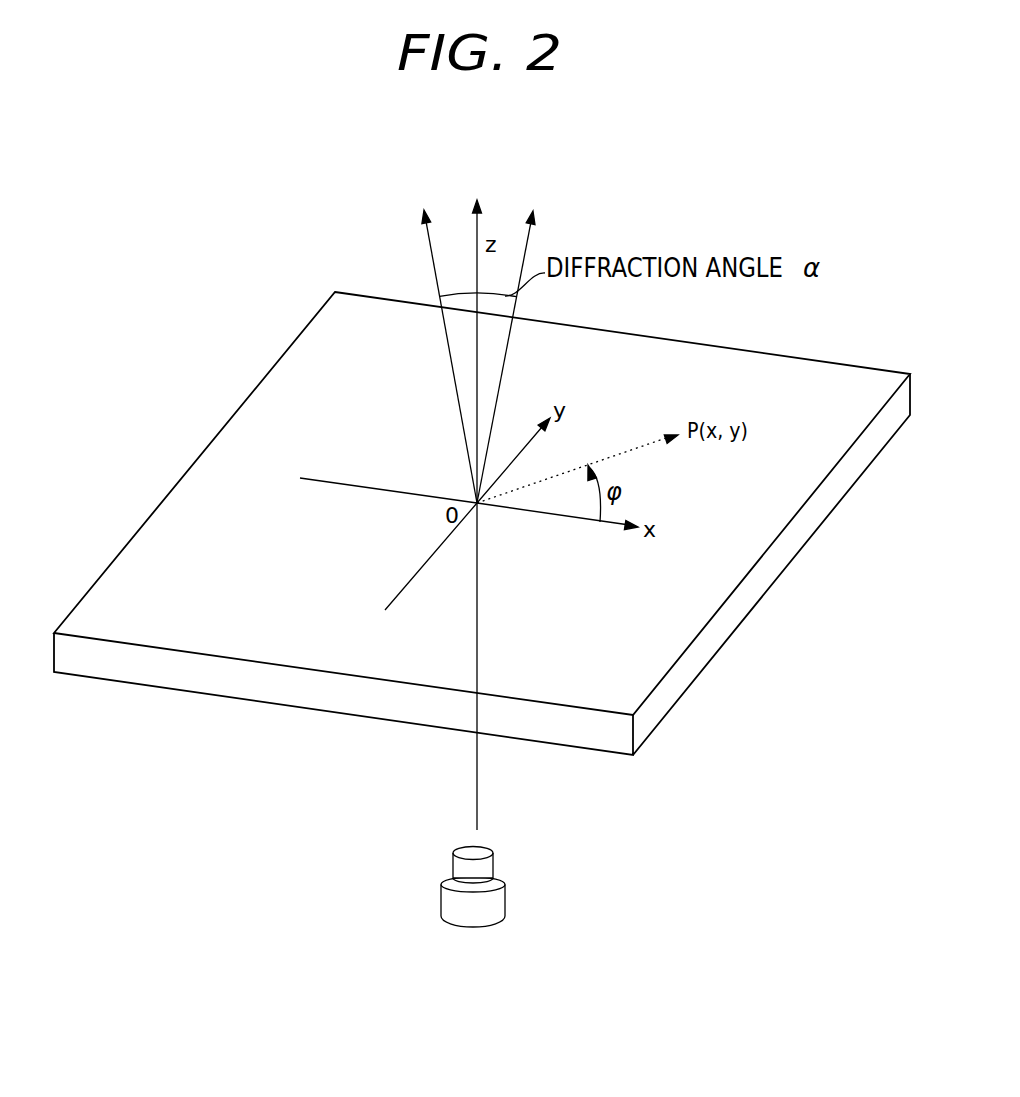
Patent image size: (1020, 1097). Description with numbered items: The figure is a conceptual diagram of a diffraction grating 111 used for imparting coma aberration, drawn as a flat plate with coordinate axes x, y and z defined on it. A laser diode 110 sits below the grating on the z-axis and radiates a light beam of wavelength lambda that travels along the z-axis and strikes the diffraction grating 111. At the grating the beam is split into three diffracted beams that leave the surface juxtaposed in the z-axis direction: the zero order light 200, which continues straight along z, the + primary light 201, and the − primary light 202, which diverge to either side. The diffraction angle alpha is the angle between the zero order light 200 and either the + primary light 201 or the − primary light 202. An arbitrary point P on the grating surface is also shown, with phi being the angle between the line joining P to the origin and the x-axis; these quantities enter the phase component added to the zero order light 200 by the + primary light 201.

The laser diode 110 is at (505, 878).
The diffraction grating 111 is at (850, 378).
The zero order light 200 is at (482, 220).
The + primary light 201 is at (530, 243).
The − primary light 202 is at (427, 251).